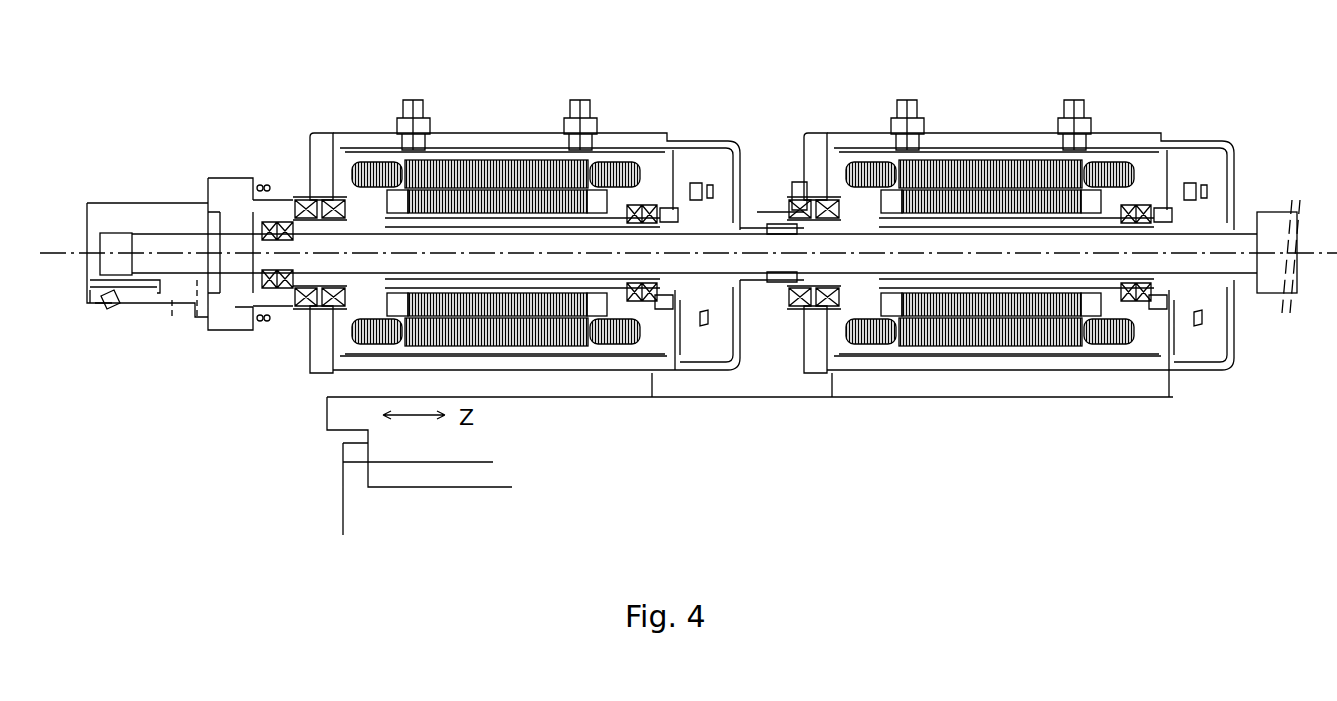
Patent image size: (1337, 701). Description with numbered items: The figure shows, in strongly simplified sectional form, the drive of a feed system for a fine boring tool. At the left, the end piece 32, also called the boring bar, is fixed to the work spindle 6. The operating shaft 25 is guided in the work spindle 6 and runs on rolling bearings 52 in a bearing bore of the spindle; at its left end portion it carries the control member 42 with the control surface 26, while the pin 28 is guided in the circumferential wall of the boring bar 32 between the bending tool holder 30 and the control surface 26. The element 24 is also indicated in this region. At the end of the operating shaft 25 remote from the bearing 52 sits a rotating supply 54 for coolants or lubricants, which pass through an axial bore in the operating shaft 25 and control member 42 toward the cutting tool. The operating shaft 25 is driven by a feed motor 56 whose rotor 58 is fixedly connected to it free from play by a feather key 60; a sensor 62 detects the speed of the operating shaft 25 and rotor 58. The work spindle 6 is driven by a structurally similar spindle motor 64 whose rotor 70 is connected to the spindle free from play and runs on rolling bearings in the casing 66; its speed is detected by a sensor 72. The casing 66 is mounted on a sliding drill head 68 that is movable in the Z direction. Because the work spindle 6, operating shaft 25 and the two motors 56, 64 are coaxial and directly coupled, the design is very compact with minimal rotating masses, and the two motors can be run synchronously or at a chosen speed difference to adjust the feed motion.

The work spindle 6 is at (257, 180).
The bearing bracket 24 is at (112, 303).
The operating shaft 25 is at (613, 343).
The control surface 26 is at (116, 235).
The pin 28 is at (123, 302).
The bending tool holder 30 is at (147, 302).
The end piece 32 is at (130, 212).
The control member 42 is at (167, 247).
The rolling bearings 52 is at (288, 317).
The rotating supply 54 is at (1268, 217).
The feed motor 56 is at (960, 137).
The rotor 58 is at (997, 160).
The feather key 60 is at (777, 283).
The sensor 62 is at (1182, 290).
The spindle motor 64 is at (480, 138).
The casing 66 is at (320, 135).
The sliding drill head 68 is at (412, 442).
The rotor 70 is at (520, 160).
The sensor 72 is at (717, 293).